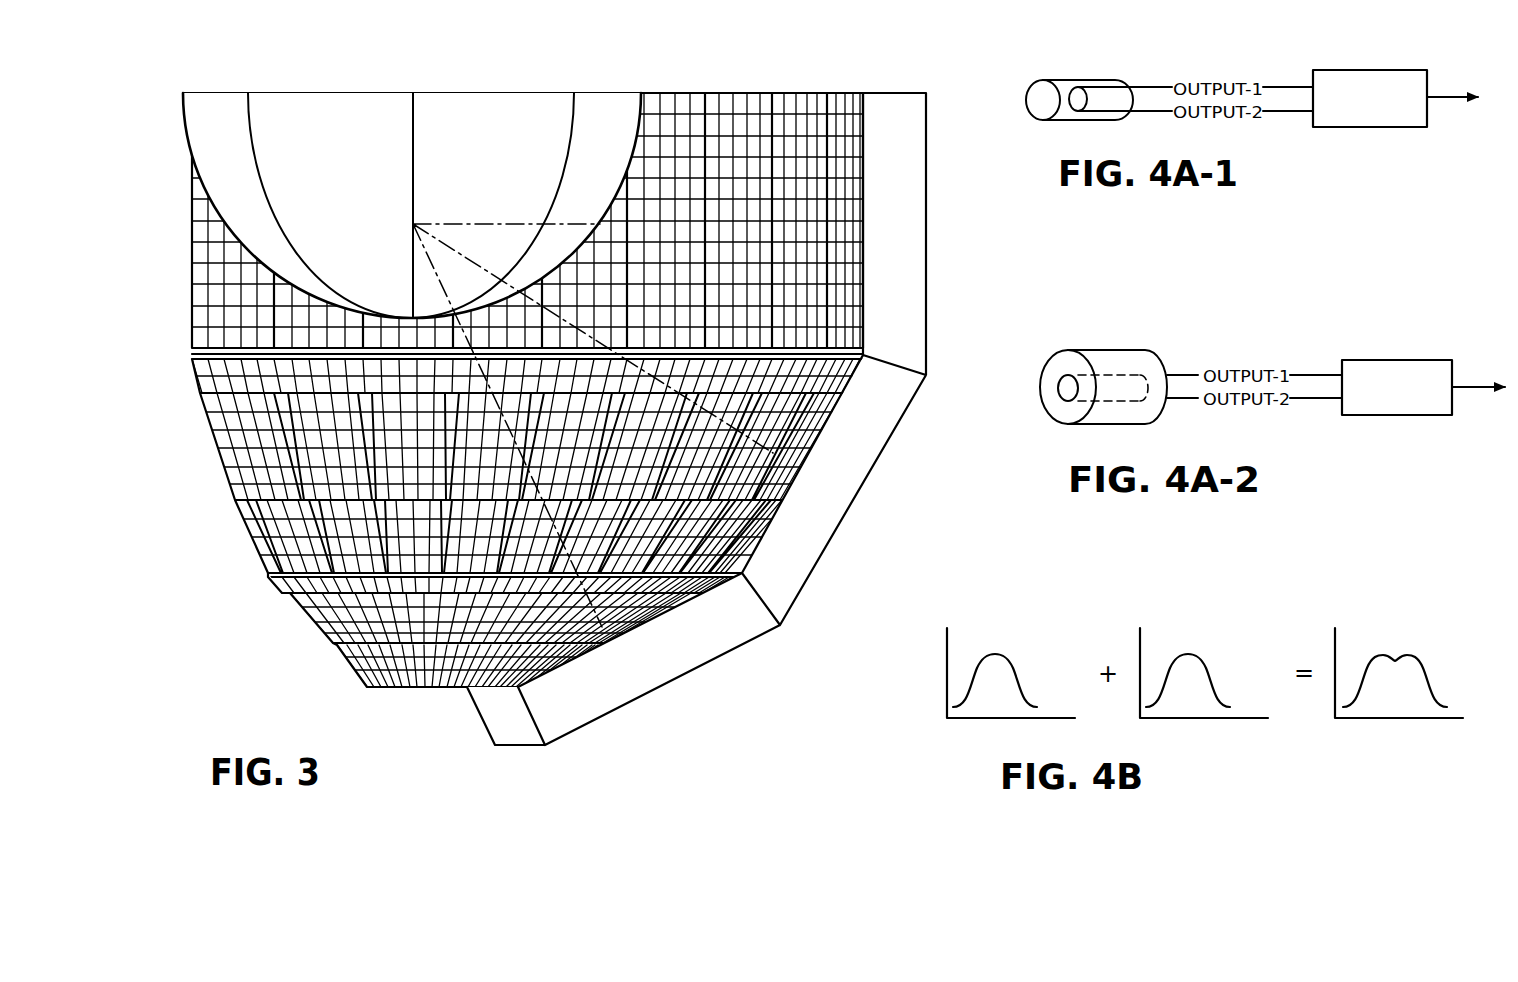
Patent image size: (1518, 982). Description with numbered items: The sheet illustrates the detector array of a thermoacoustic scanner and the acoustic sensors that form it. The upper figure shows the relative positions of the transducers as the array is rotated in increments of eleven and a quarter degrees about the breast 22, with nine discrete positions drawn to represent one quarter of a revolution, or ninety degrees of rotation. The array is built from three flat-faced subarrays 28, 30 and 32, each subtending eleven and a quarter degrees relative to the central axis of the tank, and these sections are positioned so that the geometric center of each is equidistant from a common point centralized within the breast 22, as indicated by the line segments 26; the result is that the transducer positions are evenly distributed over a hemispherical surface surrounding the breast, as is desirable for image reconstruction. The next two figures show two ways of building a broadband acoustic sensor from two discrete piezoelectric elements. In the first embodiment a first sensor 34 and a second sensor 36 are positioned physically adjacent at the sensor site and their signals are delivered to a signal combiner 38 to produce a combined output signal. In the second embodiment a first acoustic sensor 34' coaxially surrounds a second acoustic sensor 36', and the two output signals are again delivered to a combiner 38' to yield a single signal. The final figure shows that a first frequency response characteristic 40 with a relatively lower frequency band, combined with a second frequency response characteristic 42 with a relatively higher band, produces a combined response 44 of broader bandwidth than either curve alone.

In FIG. 3, the breast 22 is at (357, 209).
In FIG. 3, the line segments 26 is at (437, 272).
In FIG. 3, the first flat-faced subarray 28 is at (192, 270).
In FIG. 3, the second flat-faced subarray 30 is at (228, 472).
In FIG. 3, the third flat-faced subarray 32 is at (314, 626).
In FIG. 4A-1, the first sensor 34 is at (1073, 81).
In FIG. 4A-1, the second sensor 36 is at (1120, 81).
In FIG. 4A-1, the signal combiner 38 is at (1395, 81).
In FIG. 4A-2, the first acoustic sensor 34' is at (1085, 400).
In FIG. 4A-2, the second acoustic sensor 36' is at (1073, 384).
In FIG. 4A-2, the combiner 38' is at (1423, 369).
In FIG. 4B, the first frequency response characteristic 40 is at (1016, 652).
In FIG. 4B, the second frequency response characteristic 42 is at (1211, 651).
In FIG. 4B, the combined response 44 is at (1407, 650).